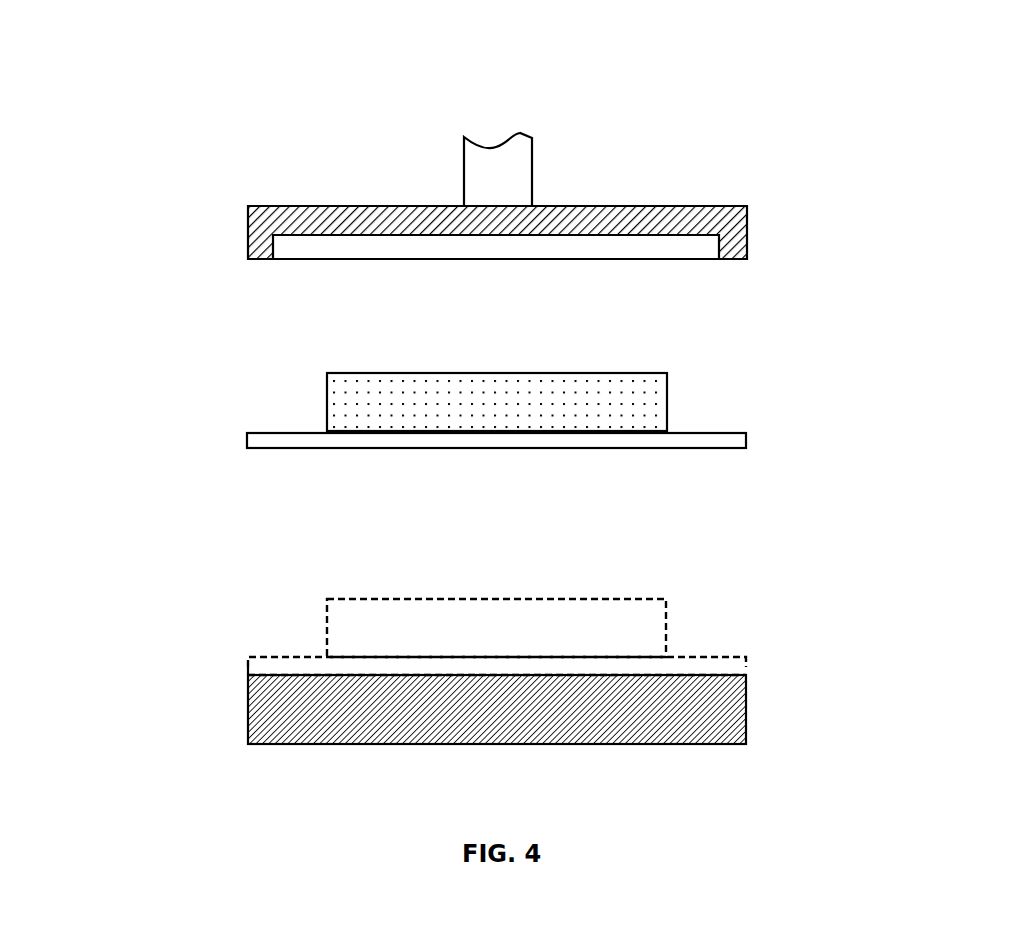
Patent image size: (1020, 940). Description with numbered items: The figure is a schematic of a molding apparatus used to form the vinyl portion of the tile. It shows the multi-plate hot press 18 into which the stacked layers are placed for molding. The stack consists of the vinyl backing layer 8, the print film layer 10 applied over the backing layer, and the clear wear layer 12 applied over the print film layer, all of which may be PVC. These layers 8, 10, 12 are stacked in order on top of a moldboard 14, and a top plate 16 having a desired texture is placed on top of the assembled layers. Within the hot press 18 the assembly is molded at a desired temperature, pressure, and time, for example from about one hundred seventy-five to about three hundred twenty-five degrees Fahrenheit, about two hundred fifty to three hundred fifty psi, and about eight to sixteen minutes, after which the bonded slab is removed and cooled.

The multi-plate hot press 18 is at (186, 316).
The moldboard 14 is at (270, 440).
The vinyl backing layer 8 is at (621, 386).
The print film layer 10 is at (621, 386).
The clear wear layer 12 is at (621, 386).
The top plate 16 is at (652, 403).